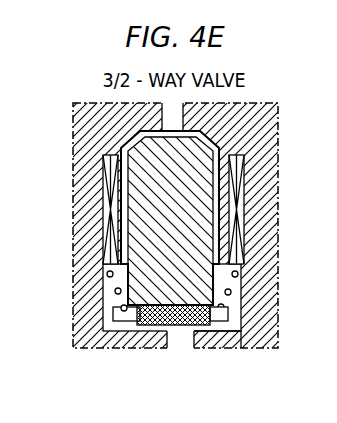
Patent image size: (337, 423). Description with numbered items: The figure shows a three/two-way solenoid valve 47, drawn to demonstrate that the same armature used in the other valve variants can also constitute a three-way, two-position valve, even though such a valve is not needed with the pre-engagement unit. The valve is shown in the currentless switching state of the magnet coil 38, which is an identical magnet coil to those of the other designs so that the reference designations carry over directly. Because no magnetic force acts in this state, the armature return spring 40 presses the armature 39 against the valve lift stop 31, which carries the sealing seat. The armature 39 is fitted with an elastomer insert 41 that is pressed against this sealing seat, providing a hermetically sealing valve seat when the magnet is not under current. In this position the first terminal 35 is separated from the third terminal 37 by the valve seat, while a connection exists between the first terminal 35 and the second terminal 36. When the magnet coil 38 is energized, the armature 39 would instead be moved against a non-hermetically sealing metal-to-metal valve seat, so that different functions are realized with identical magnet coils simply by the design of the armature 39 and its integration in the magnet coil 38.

The 3/2-way solenoid valve 47 is at (68, 357).
The second terminal 36 is at (181, 121).
The magnet coil 38 is at (245, 172).
The armature 39 is at (190, 220).
The armature return spring 40 is at (115, 291).
The elastomer insert 41 is at (138, 343).
The third terminal 37 is at (174, 330).
The valve lift stop 31 is at (191, 335).
The first terminal 35 is at (222, 343).